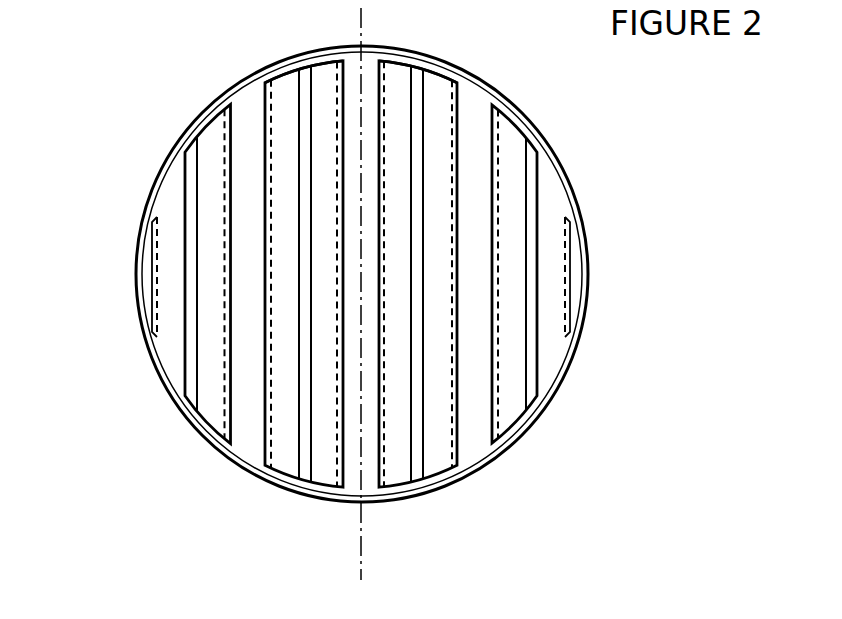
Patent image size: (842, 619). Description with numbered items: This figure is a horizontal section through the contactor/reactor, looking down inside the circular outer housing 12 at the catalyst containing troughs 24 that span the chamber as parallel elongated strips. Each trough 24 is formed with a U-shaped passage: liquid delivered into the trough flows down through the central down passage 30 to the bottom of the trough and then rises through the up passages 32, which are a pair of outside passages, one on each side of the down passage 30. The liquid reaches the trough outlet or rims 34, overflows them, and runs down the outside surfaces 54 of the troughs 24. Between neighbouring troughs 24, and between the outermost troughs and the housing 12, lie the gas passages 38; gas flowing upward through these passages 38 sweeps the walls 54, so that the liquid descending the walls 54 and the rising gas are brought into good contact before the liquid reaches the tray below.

The outer housing 12 is at (393, 274).
The catalyst containing trough 24 is at (362, 110).
The down passage 30 is at (362, 287).
The up passage 32 is at (362, 312).
The trough outlet or rim 34 is at (401, 270).
The gas passage 38 is at (362, 430).
The outside surface 54 is at (362, 274).